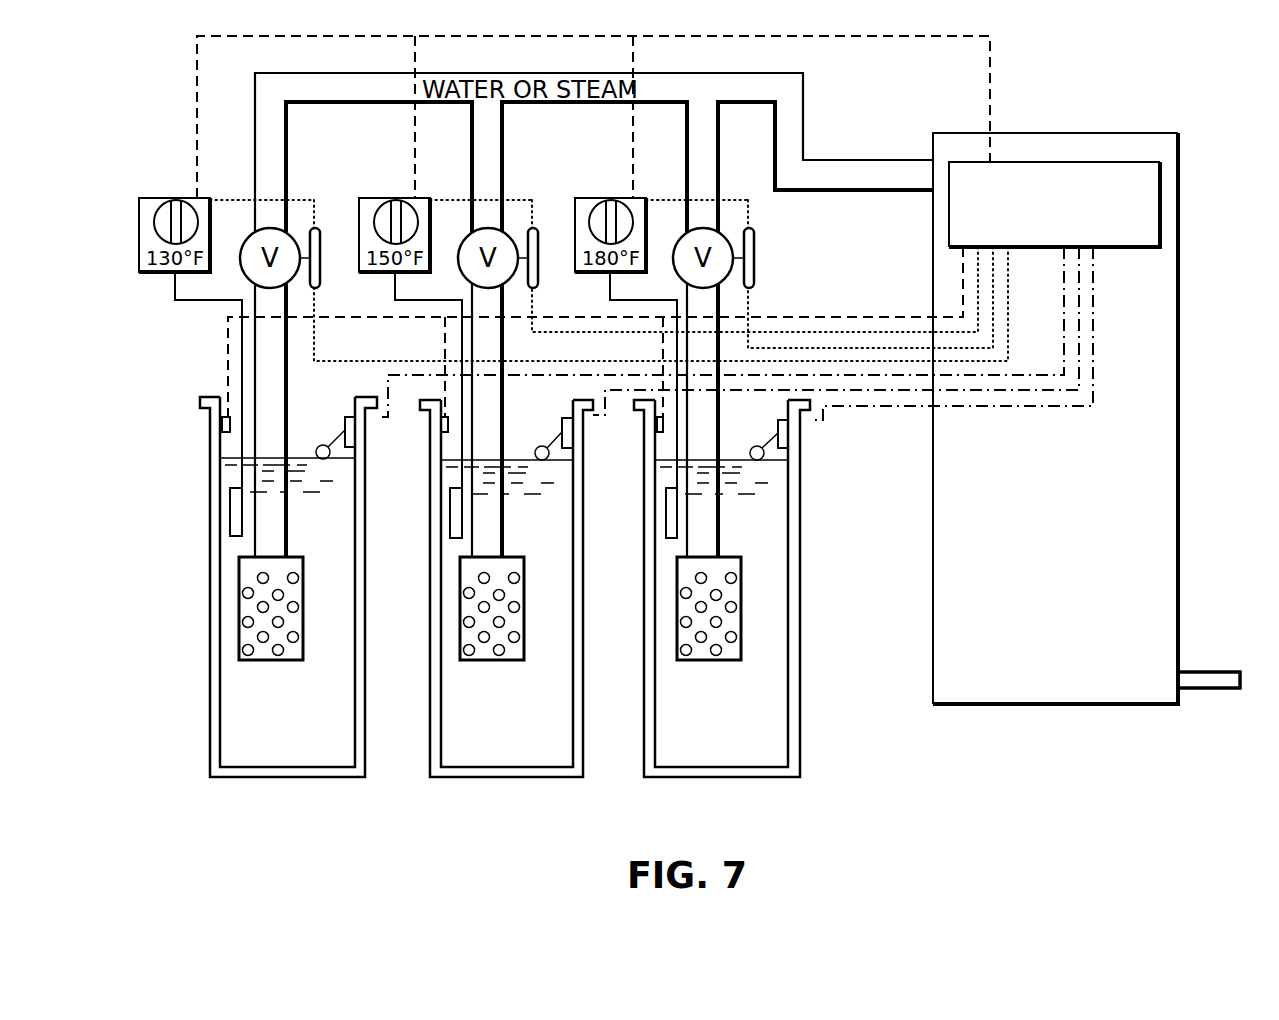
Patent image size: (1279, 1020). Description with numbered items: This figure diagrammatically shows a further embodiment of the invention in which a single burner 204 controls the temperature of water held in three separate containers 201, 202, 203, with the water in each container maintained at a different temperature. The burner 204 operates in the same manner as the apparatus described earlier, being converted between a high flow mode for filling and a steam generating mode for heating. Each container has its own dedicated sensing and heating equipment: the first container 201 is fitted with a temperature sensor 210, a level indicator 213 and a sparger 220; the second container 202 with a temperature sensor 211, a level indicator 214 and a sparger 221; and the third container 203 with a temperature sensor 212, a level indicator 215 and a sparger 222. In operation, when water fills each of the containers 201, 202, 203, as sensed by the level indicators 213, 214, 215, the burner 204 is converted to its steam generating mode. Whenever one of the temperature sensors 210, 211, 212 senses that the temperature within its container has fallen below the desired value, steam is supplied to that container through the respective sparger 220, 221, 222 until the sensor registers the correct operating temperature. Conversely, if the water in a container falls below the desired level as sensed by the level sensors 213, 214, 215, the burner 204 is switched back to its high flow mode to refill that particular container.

The container 201 is at (310, 780).
The container 202 is at (535, 780).
The container 203 is at (750, 780).
The burner 204 is at (1180, 453).
The temperature sensor 210 is at (230, 503).
The temperature sensor 211 is at (450, 505).
The temperature sensor 212 is at (666, 505).
The level indicator 213 is at (345, 428).
The level indicator 214 is at (563, 428).
The level indicator 215 is at (778, 428).
The sparger 220 is at (240, 635).
The sparger 221 is at (460, 634).
The sparger 222 is at (677, 634).